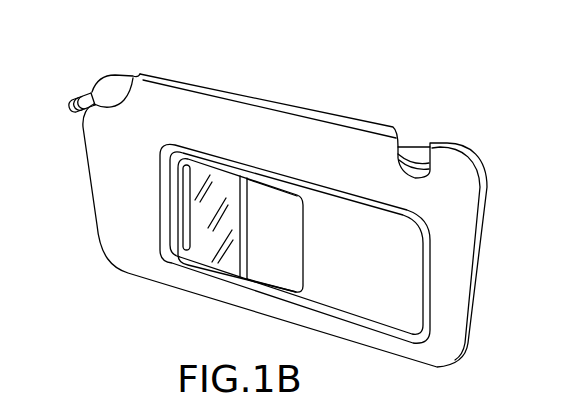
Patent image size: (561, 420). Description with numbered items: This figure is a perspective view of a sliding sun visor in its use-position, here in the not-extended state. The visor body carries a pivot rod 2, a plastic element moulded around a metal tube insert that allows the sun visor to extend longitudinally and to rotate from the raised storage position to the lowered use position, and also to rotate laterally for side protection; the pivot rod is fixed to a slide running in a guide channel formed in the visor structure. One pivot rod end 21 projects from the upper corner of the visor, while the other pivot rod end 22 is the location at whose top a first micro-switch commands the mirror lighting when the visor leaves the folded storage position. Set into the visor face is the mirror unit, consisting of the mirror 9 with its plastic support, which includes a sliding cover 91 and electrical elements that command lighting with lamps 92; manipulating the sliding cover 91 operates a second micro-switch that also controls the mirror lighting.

The pivot rod 2 is at (120, 81).
The pivot rod end 21 is at (89, 91).
The pivot rod end 22 is at (358, 143).
The mirror 9 is at (220, 228).
The sliding cover 91 is at (280, 252).
The lamps 92 is at (187, 190).